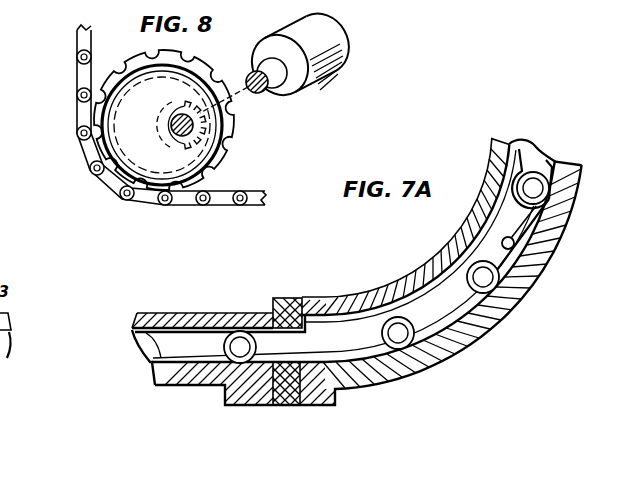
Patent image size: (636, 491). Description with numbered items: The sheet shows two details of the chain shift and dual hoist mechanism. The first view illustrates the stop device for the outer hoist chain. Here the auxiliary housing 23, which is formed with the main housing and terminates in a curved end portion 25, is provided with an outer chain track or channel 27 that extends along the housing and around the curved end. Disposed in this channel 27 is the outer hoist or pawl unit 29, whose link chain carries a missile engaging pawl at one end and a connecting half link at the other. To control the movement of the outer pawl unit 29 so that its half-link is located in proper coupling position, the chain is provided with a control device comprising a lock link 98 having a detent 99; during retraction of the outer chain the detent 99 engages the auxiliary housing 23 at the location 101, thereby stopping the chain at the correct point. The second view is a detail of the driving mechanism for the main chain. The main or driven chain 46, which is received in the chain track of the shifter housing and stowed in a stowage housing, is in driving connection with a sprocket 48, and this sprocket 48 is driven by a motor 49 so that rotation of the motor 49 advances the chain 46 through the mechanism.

In FIG. 7A, the auxiliary housing 23 is at (160, 318).
In FIG. 7A, the curved end portion 25 is at (568, 208).
In FIG. 7A, the outer chain track or channel 27 is at (515, 242).
In FIG. 7A, the outer hoist or pawl unit 29 is at (439, 309).
In FIG. 8, the main or driven chain 46 is at (79, 77).
In FIG. 8, the sprocket 48 is at (210, 137).
In FIG. 8, the motor 49 is at (322, 72).
In FIG. 7A, the lock link 98 is at (350, 330).
In FIG. 7A, the detent 99 is at (312, 322).
In FIG. 7A, the detent engagement location on auxiliary housing 101 is at (273, 312).